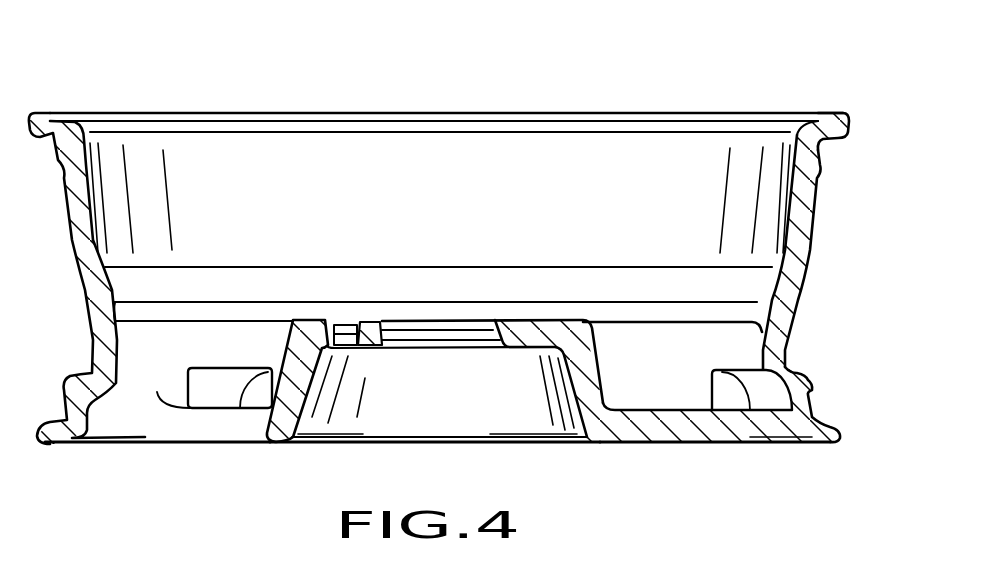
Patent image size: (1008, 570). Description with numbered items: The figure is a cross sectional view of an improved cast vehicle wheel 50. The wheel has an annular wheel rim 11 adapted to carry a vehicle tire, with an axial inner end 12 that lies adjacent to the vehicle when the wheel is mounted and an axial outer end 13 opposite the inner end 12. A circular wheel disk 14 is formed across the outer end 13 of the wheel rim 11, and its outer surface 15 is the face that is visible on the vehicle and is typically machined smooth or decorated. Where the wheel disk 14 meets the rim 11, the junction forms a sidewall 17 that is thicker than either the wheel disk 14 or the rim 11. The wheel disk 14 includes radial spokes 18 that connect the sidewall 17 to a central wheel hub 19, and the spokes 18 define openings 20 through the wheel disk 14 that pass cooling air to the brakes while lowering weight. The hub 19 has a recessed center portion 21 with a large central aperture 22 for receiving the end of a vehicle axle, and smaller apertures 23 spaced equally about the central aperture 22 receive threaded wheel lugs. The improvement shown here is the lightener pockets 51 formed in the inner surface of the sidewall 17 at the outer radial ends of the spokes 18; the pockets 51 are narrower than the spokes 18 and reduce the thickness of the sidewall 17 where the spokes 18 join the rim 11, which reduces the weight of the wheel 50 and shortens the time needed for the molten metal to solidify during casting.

The improved wheel 50 is at (682, 92).
The axial inner end 12 is at (845, 131).
The wheel rim 11 is at (800, 234).
The axial outer end 13 is at (838, 425).
The sidewall 17 is at (766, 428).
The radial spokes 18 is at (710, 447).
The outer surface 15 is at (652, 447).
The recessed center portion 21 is at (540, 338).
The central aperture 22 is at (455, 328).
The smaller apertures 23 is at (343, 332).
The wheel hub 19 is at (273, 433).
The wheel disk 14 is at (367, 452).
The openings 20 is at (175, 460).
The lightener pockets 51 is at (212, 384).